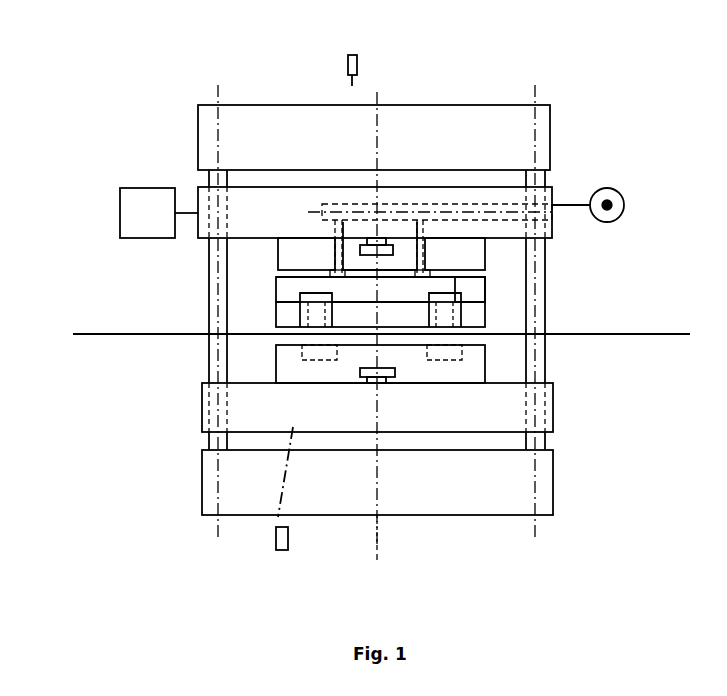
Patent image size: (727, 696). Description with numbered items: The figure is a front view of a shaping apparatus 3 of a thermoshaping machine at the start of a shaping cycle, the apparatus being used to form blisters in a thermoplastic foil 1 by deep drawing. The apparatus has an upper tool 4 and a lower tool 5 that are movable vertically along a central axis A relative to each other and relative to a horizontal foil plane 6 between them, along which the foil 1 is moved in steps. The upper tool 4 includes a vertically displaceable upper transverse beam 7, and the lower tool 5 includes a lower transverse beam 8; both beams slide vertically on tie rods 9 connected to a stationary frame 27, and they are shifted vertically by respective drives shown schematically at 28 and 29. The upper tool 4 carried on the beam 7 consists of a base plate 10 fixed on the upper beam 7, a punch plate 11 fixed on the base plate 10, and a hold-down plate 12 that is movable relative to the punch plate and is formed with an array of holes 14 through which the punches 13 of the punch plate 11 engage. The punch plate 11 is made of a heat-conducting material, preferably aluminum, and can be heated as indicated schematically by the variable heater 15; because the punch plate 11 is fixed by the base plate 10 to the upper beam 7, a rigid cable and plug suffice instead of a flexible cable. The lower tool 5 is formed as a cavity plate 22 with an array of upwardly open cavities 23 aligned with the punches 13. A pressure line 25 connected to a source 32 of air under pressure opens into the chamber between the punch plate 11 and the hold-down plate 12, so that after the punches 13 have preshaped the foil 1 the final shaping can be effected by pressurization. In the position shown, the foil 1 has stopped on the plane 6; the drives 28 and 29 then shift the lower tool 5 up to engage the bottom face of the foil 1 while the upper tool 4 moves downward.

The foil 1 is at (171, 336).
The shaping apparatus 3 is at (190, 268).
The upper tool 4 is at (440, 250).
The lower tool 5 is at (187, 409).
The foil plane 6 is at (99, 336).
The upper transverse beam 7 is at (293, 205).
The lower transverse beam 8 is at (240, 400).
The tie rods 9 is at (203, 173).
The base plate 10 is at (293, 253).
The punch plate 11 is at (458, 283).
The hold-down plate 12 is at (470, 323).
The punches 13 is at (453, 317).
The holes 14 is at (300, 322).
The variable heater 15 is at (120, 208).
The cavity plate 22 is at (468, 368).
The cavities 23 is at (330, 352).
The pressure line 25 is at (342, 250).
The stationary frame 27 is at (466, 497).
The drive 28 is at (358, 60).
The drive 29 is at (288, 543).
The source of air under pressure 32 is at (624, 208).
The central axis A is at (380, 525).